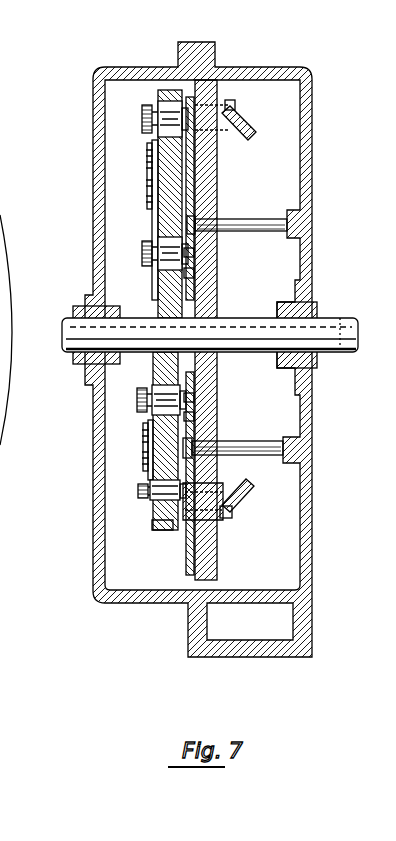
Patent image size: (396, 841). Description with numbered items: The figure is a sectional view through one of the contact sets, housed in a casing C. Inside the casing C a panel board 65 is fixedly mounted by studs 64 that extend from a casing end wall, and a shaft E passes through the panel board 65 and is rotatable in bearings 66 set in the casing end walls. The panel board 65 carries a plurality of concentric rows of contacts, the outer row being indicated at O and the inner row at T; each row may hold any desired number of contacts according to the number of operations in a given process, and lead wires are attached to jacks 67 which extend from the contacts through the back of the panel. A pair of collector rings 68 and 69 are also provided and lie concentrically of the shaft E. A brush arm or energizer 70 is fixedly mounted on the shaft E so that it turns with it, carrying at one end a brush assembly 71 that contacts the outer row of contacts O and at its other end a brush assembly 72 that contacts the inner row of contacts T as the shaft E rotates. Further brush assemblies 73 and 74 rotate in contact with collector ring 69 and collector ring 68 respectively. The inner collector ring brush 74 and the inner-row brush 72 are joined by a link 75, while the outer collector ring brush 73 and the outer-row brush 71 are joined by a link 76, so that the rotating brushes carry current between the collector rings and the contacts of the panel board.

The stud 64 is at (248, 222).
The panel board 65 is at (218, 560).
The bearing 66 is at (85, 303).
The jack 67 is at (228, 102).
The collector ring 68 is at (194, 272).
The collector ring 69 is at (194, 252).
The brush arm 70 is at (143, 492).
The brush assembly 71 is at (157, 98).
The brush assembly 72 is at (150, 528).
The brush assembly 73 is at (142, 250).
The brush assembly 74 is at (140, 400).
The link 75 is at (143, 448).
The link 76 is at (150, 163).
The casing C is at (312, 492).
The shaft E is at (348, 330).
The outer row of contacts O is at (178, 73).
The inner row of contacts T is at (153, 190).